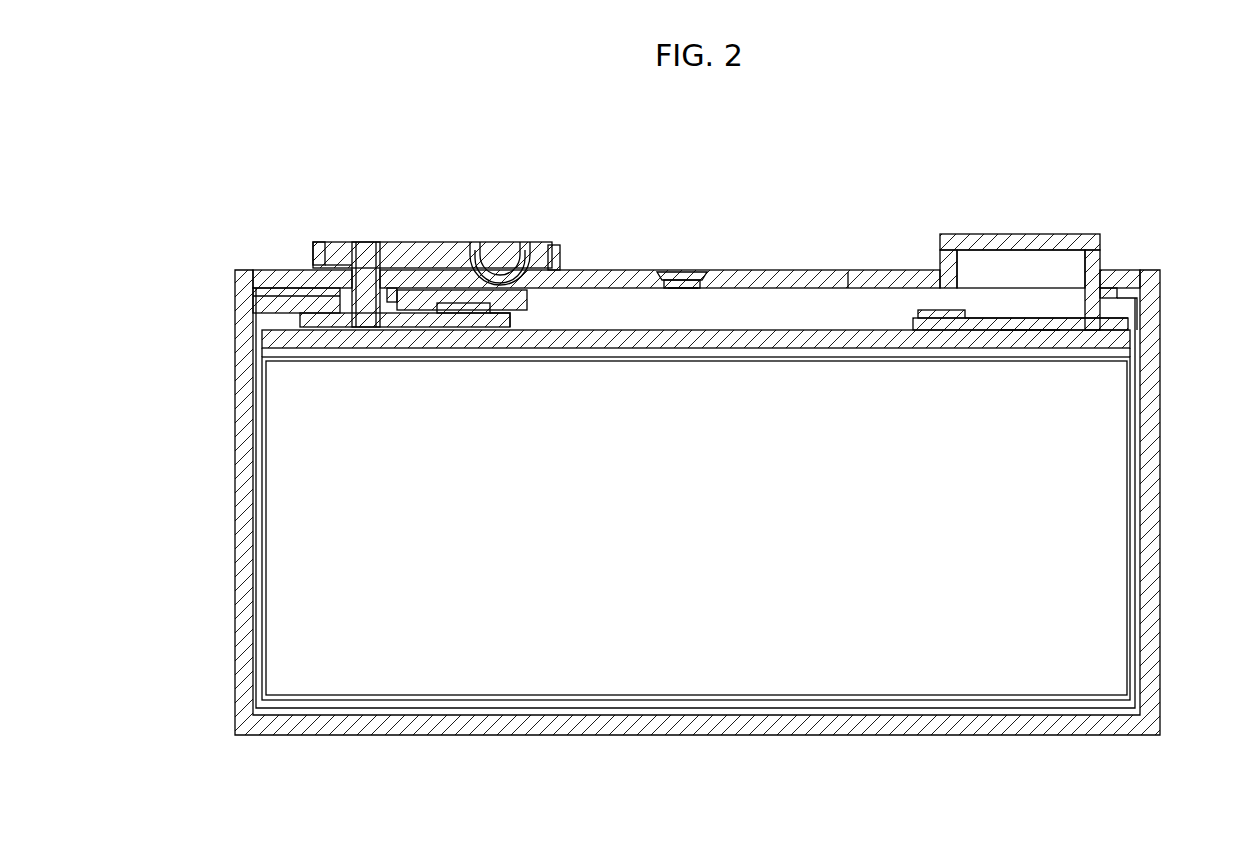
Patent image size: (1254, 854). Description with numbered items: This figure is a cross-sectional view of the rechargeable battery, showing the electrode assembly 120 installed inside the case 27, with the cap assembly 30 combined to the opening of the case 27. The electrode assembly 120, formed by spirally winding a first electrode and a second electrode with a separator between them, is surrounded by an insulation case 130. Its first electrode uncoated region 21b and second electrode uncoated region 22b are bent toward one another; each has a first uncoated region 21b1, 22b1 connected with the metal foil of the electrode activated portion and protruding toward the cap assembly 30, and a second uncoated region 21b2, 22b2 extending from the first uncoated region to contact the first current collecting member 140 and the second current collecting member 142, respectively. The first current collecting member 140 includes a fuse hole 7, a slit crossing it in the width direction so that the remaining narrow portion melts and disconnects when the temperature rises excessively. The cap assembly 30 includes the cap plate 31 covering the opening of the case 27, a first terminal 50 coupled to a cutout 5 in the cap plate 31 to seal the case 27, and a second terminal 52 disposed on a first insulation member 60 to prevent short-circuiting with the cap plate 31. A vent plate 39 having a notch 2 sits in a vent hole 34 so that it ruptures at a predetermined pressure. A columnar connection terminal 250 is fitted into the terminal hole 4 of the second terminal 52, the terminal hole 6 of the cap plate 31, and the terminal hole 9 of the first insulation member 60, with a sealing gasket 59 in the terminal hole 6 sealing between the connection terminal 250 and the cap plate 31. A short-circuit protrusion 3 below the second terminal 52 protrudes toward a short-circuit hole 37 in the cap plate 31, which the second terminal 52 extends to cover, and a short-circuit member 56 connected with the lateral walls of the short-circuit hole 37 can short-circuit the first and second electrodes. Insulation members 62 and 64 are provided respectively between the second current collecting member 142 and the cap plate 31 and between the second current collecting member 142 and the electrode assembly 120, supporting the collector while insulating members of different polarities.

The notch 2 is at (672, 273).
The short-circuit protrusion 3 is at (530, 248).
The terminal hole 4 is at (375, 357).
The cutout 5 is at (857, 270).
The terminal hole 6 is at (405, 240).
The fuse hole 7 is at (1022, 357).
The terminal hole 9 is at (373, 240).
The case 27 is at (775, 727).
The cap assembly 30 is at (776, 238).
The cap plate 31 is at (610, 280).
The vent hole 34 is at (678, 290).
The short-circuit hole 37 is at (498, 248).
The vent plate 39 is at (702, 272).
The first terminal 50 is at (1015, 236).
The second terminal 52 is at (450, 240).
The short-circuit member 56 is at (510, 248).
The sealing gasket 59 is at (315, 292).
The first insulation member 60 is at (572, 252).
The insulation member 62 is at (268, 307).
The insulation member 64 is at (612, 340).
The electrode assembly 120 is at (652, 668).
The insulation case 130 is at (1136, 521).
The first current collecting member 140 is at (1063, 357).
The second current collecting member 142 is at (500, 357).
The connection terminal 250 is at (362, 250).
The first electrode uncoated region 21b is at (972, 443).
The first uncoated region 21b1 is at (952, 357).
The second uncoated region 21b2 is at (885, 357).
The second electrode uncoated region 22b is at (505, 455).
The first uncoated region 22b1 is at (450, 357).
The second uncoated region 22b2 is at (478, 357).